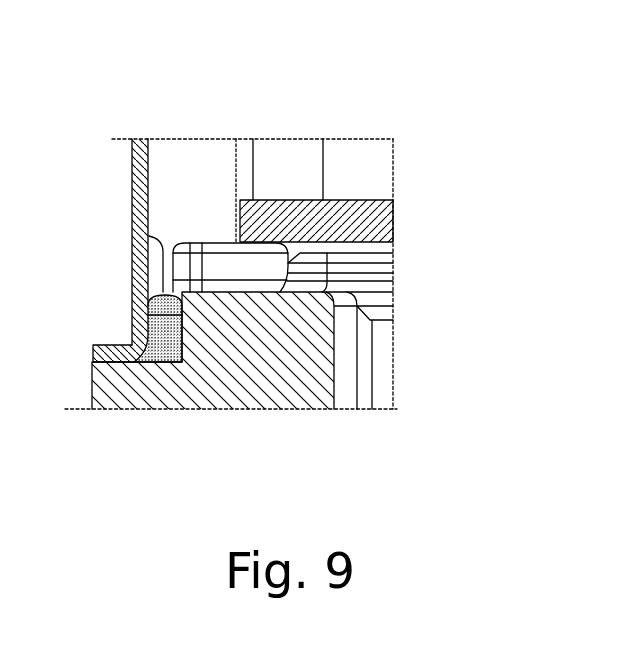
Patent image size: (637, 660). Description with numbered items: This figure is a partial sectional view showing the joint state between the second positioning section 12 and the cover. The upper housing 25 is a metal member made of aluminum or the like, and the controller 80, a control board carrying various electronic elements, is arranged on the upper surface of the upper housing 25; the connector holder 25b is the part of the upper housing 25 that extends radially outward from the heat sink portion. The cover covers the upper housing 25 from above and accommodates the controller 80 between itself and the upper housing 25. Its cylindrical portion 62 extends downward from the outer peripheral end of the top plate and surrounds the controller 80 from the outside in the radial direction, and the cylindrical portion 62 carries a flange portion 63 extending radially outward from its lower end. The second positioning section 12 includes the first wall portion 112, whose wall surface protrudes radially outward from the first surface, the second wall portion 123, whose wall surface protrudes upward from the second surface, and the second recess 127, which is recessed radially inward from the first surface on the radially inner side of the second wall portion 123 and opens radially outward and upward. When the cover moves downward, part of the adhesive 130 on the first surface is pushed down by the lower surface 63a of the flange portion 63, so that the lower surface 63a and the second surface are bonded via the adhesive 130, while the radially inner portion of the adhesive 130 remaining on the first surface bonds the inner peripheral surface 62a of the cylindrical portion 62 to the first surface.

The second positioning section 12 is at (198, 180).
The cylindrical portion 62 is at (131, 176).
The inner peripheral surface 62a is at (150, 183).
The first wall portion 112 is at (131, 237).
The second recess 127 is at (146, 305).
The second wall portion 123 is at (124, 344).
The flange portion 63 is at (94, 352).
The lower surface 63a is at (116, 362).
The adhesive 130 is at (189, 363).
The connector holder 25b is at (270, 396).
The upper housing 25 is at (394, 390).
The controller 80 is at (385, 223).